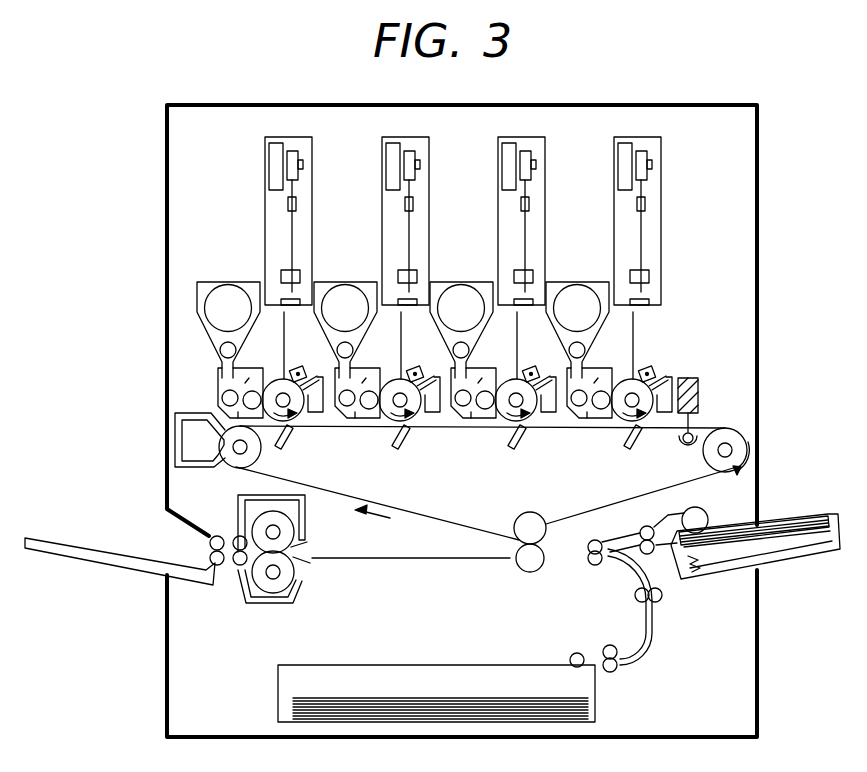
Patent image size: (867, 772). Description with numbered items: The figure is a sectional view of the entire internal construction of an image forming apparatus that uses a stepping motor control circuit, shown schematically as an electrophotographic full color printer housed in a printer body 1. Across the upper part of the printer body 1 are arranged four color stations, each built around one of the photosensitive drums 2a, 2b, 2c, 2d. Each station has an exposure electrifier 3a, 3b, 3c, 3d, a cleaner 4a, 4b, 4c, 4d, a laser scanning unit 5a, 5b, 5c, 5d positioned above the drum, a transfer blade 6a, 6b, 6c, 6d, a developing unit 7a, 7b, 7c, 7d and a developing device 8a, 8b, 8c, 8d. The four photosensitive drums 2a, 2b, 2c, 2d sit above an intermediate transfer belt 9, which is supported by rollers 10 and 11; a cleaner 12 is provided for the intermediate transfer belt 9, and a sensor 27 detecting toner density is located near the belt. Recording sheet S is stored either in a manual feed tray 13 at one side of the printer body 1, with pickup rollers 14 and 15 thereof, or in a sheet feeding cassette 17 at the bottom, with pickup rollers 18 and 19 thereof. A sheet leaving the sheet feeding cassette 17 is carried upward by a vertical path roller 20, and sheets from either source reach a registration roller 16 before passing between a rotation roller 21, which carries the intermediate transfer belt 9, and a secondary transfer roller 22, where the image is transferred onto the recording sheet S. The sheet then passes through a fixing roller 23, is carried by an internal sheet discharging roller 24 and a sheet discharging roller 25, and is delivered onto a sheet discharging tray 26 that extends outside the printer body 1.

The printer body 1 is at (759, 158).
The photosensitive drum 2a is at (284, 352).
The photosensitive drum 2b is at (396, 345).
The photosensitive drum 2c is at (511, 345).
The photosensitive drum 2d is at (628, 345).
The exposure electrifier 3a is at (290, 378).
The exposure electrifier 3b is at (406, 369).
The exposure electrifier 3c is at (521, 369).
The exposure electrifier 3d is at (638, 369).
The cleaner 4a is at (301, 367).
The cleaner 4b is at (426, 377).
The cleaner 4c is at (541, 377).
The cleaner 4d is at (658, 377).
The laser scanning unit 5a is at (313, 172).
The laser scanning unit 5b is at (425, 221).
The laser scanning unit 5c is at (540, 221).
The laser scanning unit 5d is at (657, 221).
The transfer blade 6a is at (290, 446).
The transfer blade 6b is at (419, 448).
The transfer blade 6c is at (534, 448).
The transfer blade 6d is at (650, 448).
The developing unit 7a is at (227, 282).
The developing unit 7b is at (345, 309).
The developing unit 7c is at (461, 309).
The developing unit 7d is at (577, 309).
The developing device 8a is at (243, 368).
The developing device 8b is at (366, 380).
The developing device 8c is at (481, 380).
The developing device 8d is at (598, 380).
The intermediate transfer belt 9 is at (466, 429).
The roller 10 is at (706, 463).
The roller 11 is at (262, 457).
The cleaner 12 is at (197, 468).
The manual feed tray 13 is at (787, 556).
The pickup roller 14 is at (706, 512).
The pickup roller 15 is at (640, 538).
The registration roller 16 is at (590, 562).
The sheet feeding cassette 17 is at (330, 665).
The pickup roller 18 is at (570, 657).
The pickup roller 19 is at (606, 645).
The vertical path roller 20 is at (660, 600).
The rotation roller 21 is at (538, 515).
The secondary transfer roller 22 is at (530, 572).
The fixing roller 23 is at (296, 530).
The internal sheet discharging roller 24 is at (234, 541).
The sheet discharging roller 25 is at (210, 558).
The sheet discharging tray 26 is at (82, 548).
The sensor 27 is at (688, 378).
The recording sheet S is at (781, 530).